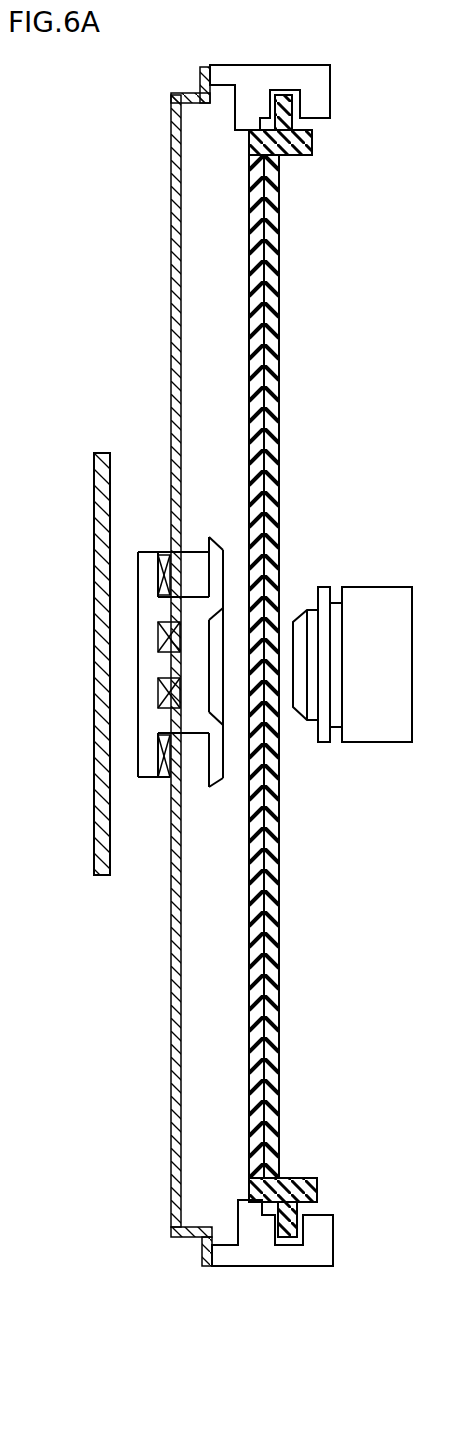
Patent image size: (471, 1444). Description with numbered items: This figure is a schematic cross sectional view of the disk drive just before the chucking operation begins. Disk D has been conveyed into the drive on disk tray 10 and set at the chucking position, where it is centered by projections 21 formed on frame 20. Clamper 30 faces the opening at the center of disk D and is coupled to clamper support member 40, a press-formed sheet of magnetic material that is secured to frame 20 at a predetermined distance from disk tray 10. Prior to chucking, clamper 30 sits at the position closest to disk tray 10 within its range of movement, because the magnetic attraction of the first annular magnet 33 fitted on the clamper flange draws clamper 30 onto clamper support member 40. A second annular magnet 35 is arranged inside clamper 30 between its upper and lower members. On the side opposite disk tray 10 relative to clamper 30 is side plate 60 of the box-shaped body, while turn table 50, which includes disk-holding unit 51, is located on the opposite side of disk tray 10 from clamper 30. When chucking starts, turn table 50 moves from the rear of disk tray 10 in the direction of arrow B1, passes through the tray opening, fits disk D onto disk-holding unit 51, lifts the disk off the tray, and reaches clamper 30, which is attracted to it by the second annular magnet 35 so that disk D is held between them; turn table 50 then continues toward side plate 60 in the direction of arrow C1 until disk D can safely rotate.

The disk tray 10 is at (270, 1003).
The frame 20 is at (295, 1280).
The projections 21 is at (252, 1212).
The clamper 30 is at (141, 790).
The first annular magnet 33 is at (165, 763).
The second annular magnet 35 is at (158, 637).
The clamper support member 40 is at (177, 1078).
The turn table 50 is at (373, 757).
The disk-holding unit 51 is at (313, 710).
The side plate 60 is at (102, 715).
The arrow C1 is at (160, 533).
The arrow B1 is at (387, 558).
The disk D is at (250, 968).